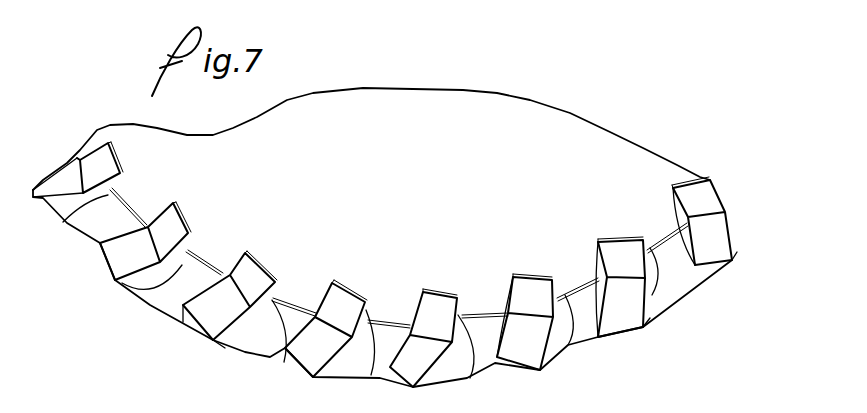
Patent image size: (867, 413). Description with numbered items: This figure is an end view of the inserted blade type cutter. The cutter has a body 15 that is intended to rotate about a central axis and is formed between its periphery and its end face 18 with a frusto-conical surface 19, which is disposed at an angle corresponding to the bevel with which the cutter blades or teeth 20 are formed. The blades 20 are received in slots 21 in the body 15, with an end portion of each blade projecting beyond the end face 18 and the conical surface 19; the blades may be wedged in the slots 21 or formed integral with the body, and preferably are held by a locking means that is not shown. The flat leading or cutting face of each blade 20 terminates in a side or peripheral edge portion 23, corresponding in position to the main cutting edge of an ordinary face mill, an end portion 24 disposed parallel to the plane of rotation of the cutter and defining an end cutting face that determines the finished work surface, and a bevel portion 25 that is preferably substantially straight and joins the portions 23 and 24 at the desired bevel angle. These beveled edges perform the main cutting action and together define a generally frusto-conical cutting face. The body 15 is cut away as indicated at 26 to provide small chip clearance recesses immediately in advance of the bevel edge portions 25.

The body 15 is at (645, 147).
The end face 18 is at (603, 147).
The frusto-conical surface 19 is at (368, 373).
The cutter blades or teeth 20 is at (296, 280).
The slots 21 is at (334, 286).
The side or peripheral edge portion 23 is at (107, 273).
The end portion 24 is at (187, 251).
The bevel portion 25 is at (220, 340).
The chip clearance recesses 26 is at (250, 340).